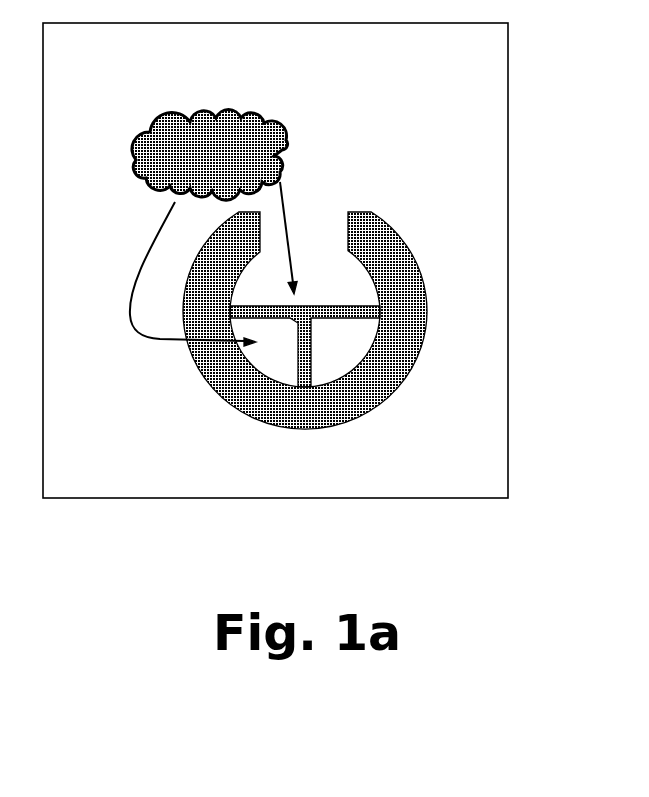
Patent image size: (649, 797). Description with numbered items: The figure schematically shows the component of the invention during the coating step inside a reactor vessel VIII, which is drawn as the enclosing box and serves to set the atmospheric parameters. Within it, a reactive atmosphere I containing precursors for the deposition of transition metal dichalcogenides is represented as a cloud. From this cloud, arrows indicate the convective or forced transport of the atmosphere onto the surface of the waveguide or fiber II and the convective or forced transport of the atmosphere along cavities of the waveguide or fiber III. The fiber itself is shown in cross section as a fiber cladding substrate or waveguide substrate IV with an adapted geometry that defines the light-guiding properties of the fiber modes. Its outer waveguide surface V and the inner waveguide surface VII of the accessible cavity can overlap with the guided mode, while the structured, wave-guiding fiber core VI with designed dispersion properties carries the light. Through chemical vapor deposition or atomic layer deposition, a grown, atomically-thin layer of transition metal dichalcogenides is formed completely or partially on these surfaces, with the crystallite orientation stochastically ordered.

The reactive atmosphere I is at (291, 150).
The convective or forced transport of the atmosphere onto the surface II is at (315, 207).
The convective or forced transport of the atmosphere along cavities III is at (148, 268).
The fiber cladding substrate or waveguide substrate IV is at (372, 262).
The outer waveguide surface V is at (305, 302).
The structured, wave-guiding fiber core VI is at (298, 322).
The inner waveguide surface VII is at (311, 320).
The reactor vessel VIII is at (508, 431).